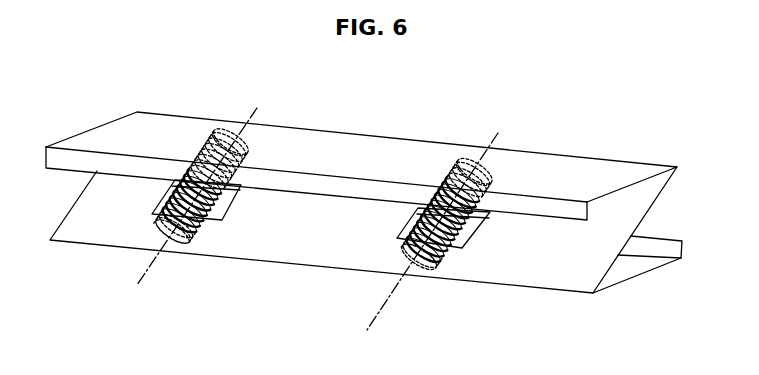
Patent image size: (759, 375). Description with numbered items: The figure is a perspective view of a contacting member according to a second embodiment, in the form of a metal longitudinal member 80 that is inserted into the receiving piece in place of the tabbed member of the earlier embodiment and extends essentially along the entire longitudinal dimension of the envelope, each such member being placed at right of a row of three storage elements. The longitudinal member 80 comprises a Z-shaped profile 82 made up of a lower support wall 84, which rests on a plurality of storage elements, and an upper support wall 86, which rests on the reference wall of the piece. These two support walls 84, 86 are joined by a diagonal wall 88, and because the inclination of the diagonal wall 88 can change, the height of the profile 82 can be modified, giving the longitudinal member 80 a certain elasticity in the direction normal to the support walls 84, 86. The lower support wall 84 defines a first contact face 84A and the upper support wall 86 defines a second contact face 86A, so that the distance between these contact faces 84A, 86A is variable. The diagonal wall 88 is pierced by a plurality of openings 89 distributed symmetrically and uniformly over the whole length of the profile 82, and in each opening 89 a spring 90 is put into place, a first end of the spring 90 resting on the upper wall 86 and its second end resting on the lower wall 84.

The longitudinal member 80 is at (493, 107).
The Z-shaped profile 82 is at (168, 108).
The support wall 84 is at (625, 262).
The first contact face 84A is at (637, 292).
The support wall 86 is at (347, 152).
The second contact face 86A is at (405, 150).
The diagonal wall 88 is at (567, 263).
The opening 89 is at (160, 194).
The spring 90 is at (217, 207).